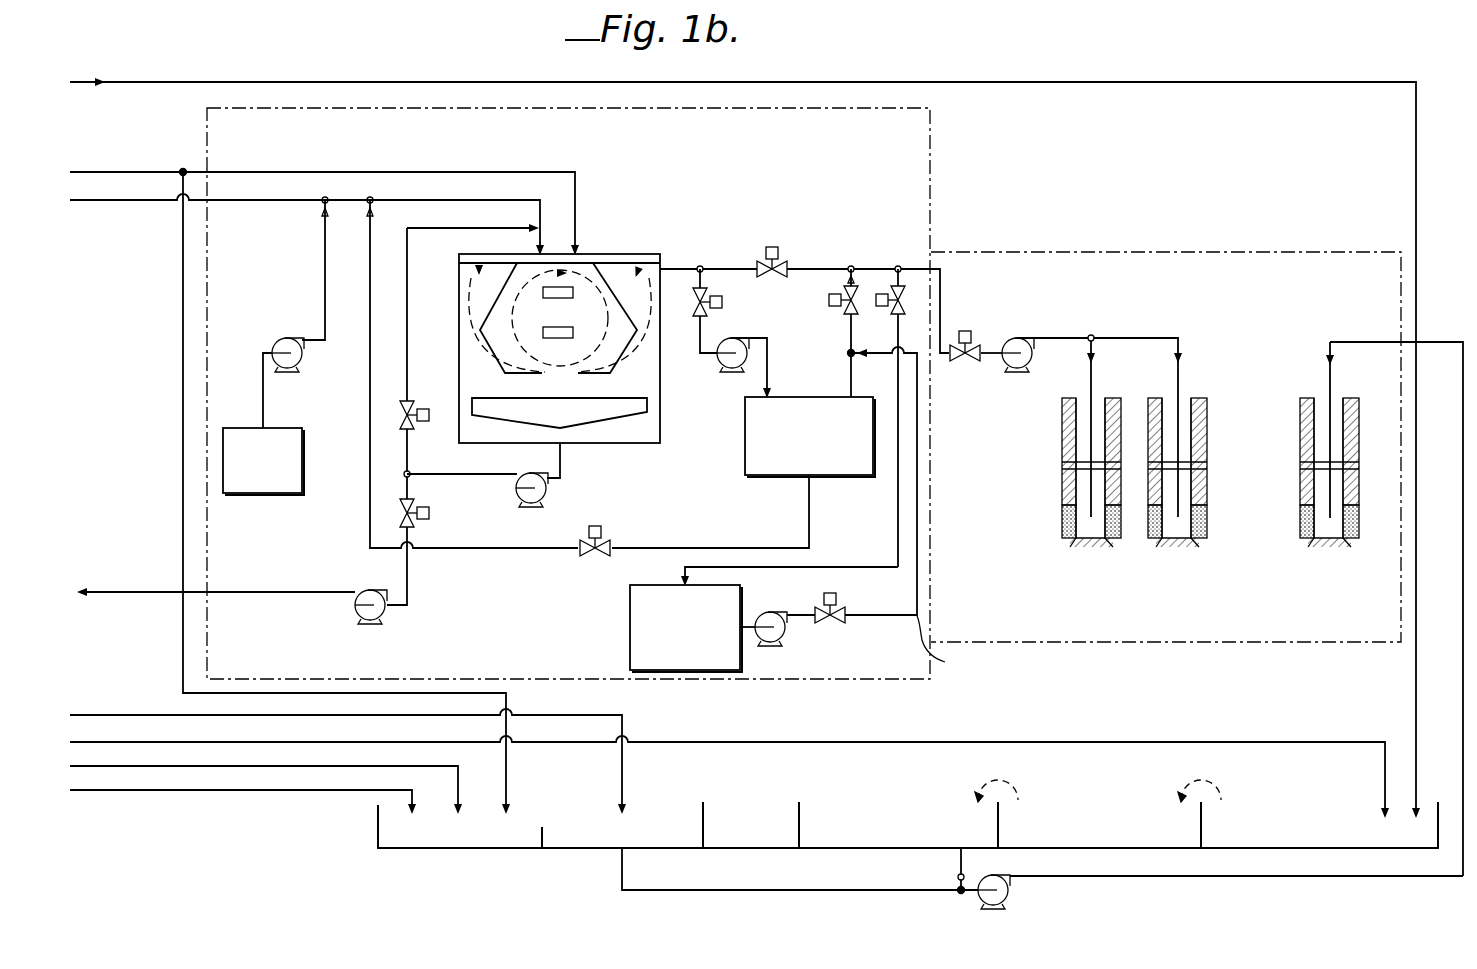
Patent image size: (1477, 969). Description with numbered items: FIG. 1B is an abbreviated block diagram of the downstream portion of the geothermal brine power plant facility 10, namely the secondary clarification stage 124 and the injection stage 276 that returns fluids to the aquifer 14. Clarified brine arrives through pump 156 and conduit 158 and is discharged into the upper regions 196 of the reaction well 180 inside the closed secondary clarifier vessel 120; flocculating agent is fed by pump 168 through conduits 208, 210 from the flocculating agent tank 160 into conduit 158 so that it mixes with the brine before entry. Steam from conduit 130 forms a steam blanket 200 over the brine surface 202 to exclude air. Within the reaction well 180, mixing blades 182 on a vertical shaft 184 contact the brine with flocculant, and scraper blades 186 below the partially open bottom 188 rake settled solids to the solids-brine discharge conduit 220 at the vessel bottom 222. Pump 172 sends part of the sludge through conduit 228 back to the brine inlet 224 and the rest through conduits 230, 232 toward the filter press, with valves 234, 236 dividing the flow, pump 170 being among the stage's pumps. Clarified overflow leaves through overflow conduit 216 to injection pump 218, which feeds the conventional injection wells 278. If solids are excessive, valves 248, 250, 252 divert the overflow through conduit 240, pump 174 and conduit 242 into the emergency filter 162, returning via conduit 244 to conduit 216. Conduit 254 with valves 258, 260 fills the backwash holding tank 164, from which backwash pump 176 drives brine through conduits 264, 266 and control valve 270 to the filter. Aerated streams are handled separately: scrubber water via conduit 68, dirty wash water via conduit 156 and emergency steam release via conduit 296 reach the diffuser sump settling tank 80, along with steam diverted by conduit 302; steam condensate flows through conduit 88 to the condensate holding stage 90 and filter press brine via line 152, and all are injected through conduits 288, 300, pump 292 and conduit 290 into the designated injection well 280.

The geothermal brine power plant facility 10 is at (1056, 172).
The aquifer 14 is at (1132, 548).
The discharge conduit 68 is at (423, 715).
The diffuser sump settling tank 80 is at (440, 852).
The condensate conduit 88 is at (455, 82).
The condensate holding stage 90 is at (870, 852).
The secondary clarifier vessel 120 is at (661, 383).
The secondary clarification stage 124 is at (931, 130).
The steam conduit 130 is at (252, 172).
The filter press brine line 152 is at (762, 742).
The pump 156 is at (428, 766).
The brine conduit 158 is at (252, 200).
The flocculating agent tank 160 is at (263, 494).
The emergency filter 162 is at (745, 465).
The backwash holding tank 164 is at (630, 602).
The flocculating agent pump 168 is at (290, 338).
The pump 170 is at (373, 590).
The sludge pump 172 is at (541, 498).
The emergency filter pump 174 is at (717, 355).
The backwash pump 176 is at (783, 638).
The reaction well 180 is at (487, 342).
The mixing blades 182 is at (548, 298).
The vertical shaft 184 is at (560, 312).
The scraper blades 186 is at (648, 413).
The partially open bottom 188 is at (577, 383).
The upper regions 196 is at (518, 270).
The steam blanket 200 is at (612, 254).
The brine surface 202 is at (620, 263).
The flocculating agent conduit 208 is at (263, 401).
The flocculating agent conduit 210 is at (325, 262).
The overflow conduit 216 is at (690, 269).
The injection pump 218 is at (1020, 338).
The solids-brine discharge conduit 220 is at (557, 480).
The vessel bottom 222 is at (522, 444).
The brine inlet 224 is at (543, 248).
The sludge recirculation conduit 228 is at (455, 475).
The sludge conduit 230 is at (412, 570).
The sludge conduit 232 is at (120, 593).
The valve 234 is at (412, 432).
The valve 236 is at (428, 522).
The diversion conduit 240 is at (704, 342).
The filter inlet conduit 242 is at (768, 353).
The filter outlet conduit 244 is at (851, 372).
The valve 248 is at (723, 308).
The valve 250 is at (787, 269).
The valve 252 is at (849, 318).
The holding tank conduit 254 is at (898, 528).
The valve 258 is at (970, 332).
The valve 260 is at (898, 315).
The backwash conduit 264 is at (752, 622).
The backwash conduit 266 is at (875, 616).
The control valve 270 is at (834, 606).
The injection stage 276 is at (1180, 644).
The conventional injection wells 278 is at (1070, 537).
The designated injection well 280 is at (1320, 490).
The condensate conduit 288 is at (958, 868).
The injection conduit 290 is at (1207, 880).
The pump 292 is at (993, 875).
The emergency steam release conduit 296 is at (261, 793).
The diffuser-settler outlet conduit 300 is at (790, 890).
The steam diversion conduit 302 is at (183, 418).